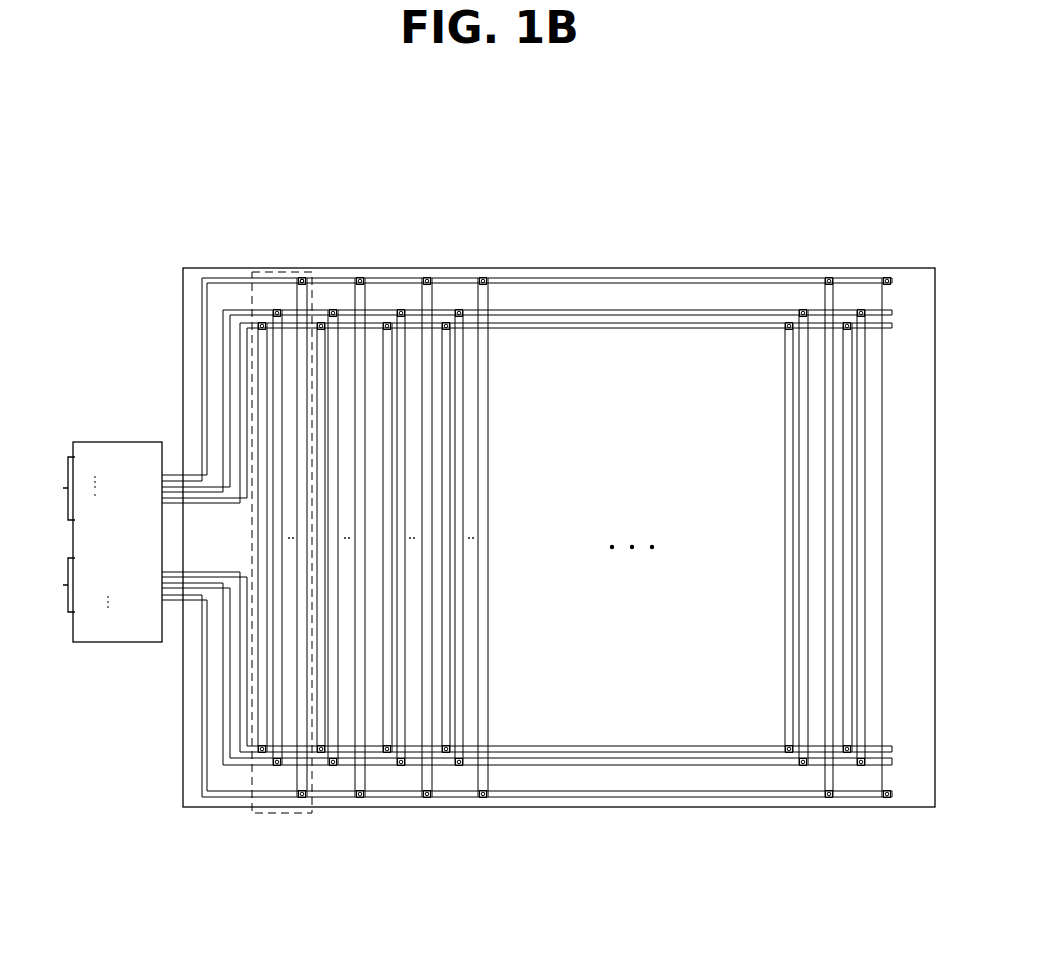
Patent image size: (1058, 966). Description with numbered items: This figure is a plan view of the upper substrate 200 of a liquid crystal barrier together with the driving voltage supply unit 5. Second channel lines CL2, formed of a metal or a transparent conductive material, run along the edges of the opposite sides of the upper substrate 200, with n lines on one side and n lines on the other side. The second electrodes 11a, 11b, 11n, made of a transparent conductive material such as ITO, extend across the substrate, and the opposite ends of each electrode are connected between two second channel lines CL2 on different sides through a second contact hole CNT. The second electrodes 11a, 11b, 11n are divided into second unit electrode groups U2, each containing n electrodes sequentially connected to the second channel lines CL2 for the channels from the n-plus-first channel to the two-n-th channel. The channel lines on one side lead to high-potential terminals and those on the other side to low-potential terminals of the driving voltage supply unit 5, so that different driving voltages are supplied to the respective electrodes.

The upper substrate 200 is at (903, 285).
The driving voltage supply unit 5 is at (123, 442).
The second electrode 11a is at (265, 722).
The second electrode 11b is at (277, 729).
The second electrode 11n is at (303, 780).
The second unit electrode group U2 is at (254, 270).
The second contact hole CNT is at (306, 276).
The second channel line CL2 is at (560, 282).